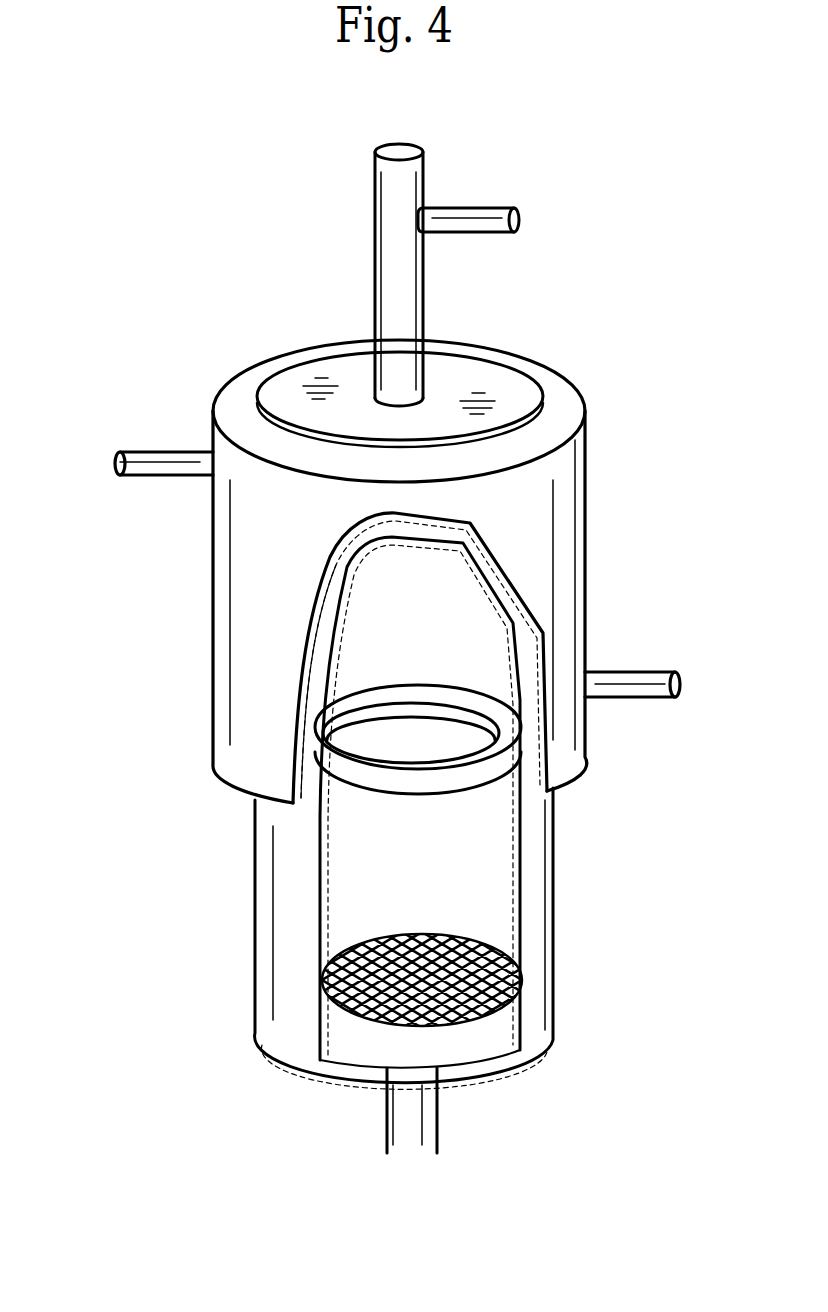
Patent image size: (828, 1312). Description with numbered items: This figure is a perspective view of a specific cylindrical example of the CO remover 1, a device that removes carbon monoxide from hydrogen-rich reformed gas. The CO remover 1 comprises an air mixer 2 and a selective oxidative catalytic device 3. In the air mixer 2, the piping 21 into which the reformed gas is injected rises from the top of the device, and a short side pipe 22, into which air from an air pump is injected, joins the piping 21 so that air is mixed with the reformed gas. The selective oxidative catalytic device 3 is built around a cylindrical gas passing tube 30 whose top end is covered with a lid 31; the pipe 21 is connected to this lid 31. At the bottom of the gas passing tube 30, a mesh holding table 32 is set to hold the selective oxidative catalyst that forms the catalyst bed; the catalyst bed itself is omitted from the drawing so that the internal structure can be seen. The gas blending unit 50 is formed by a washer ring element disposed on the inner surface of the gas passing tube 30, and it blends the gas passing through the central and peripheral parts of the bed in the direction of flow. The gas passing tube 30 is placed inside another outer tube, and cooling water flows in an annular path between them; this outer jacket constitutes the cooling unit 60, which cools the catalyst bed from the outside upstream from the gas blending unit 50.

The CO remover 1 is at (630, 266).
The air mixer 2 is at (343, 231).
The selective oxidative catalytic device 3 is at (153, 729).
The piping 21 is at (388, 282).
The pipe 22 is at (488, 210).
The gas passing tube 30 is at (537, 873).
The lid 31 is at (497, 375).
The mesh holding table 32 is at (480, 1013).
The gas blending unit 50 is at (437, 790).
The cooling unit 60 is at (313, 673).